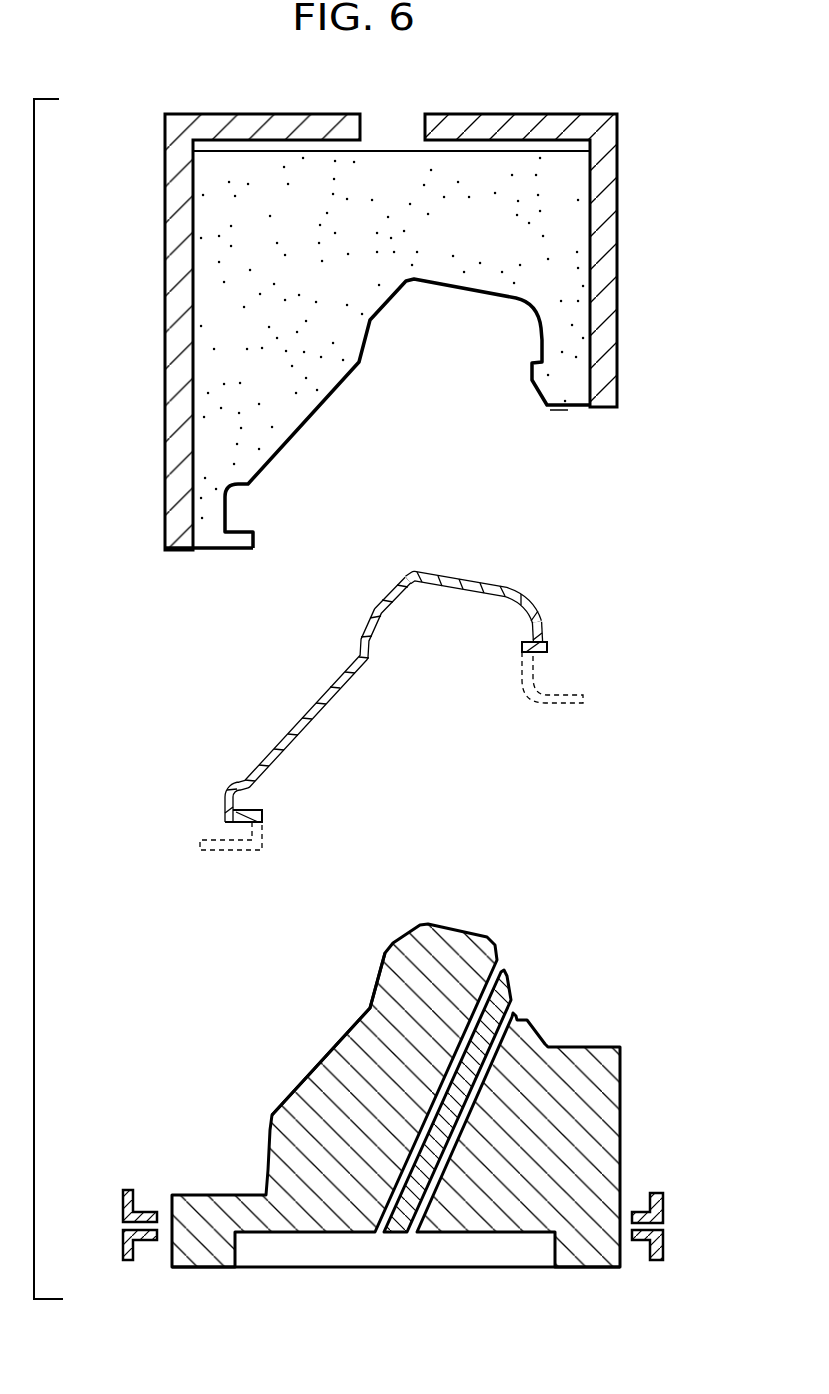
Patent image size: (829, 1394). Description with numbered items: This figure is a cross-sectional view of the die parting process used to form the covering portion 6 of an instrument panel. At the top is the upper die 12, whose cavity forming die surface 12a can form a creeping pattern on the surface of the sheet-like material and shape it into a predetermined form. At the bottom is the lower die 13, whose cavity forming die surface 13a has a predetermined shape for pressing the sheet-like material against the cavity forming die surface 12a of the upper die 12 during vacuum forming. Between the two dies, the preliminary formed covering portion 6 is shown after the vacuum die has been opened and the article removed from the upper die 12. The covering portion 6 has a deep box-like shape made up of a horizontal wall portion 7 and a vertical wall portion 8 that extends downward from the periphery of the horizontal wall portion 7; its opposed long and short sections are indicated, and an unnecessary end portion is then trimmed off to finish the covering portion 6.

The upper die 12 is at (203, 203).
The cavity forming die surface 12a is at (318, 410).
The covering portion 6 is at (446, 708).
The horizontal wall portion 7 is at (464, 582).
The vertical wall portion 8 is at (321, 698).
The lower die 13 is at (205, 1226).
The cavity forming die surface 13a is at (340, 1040).